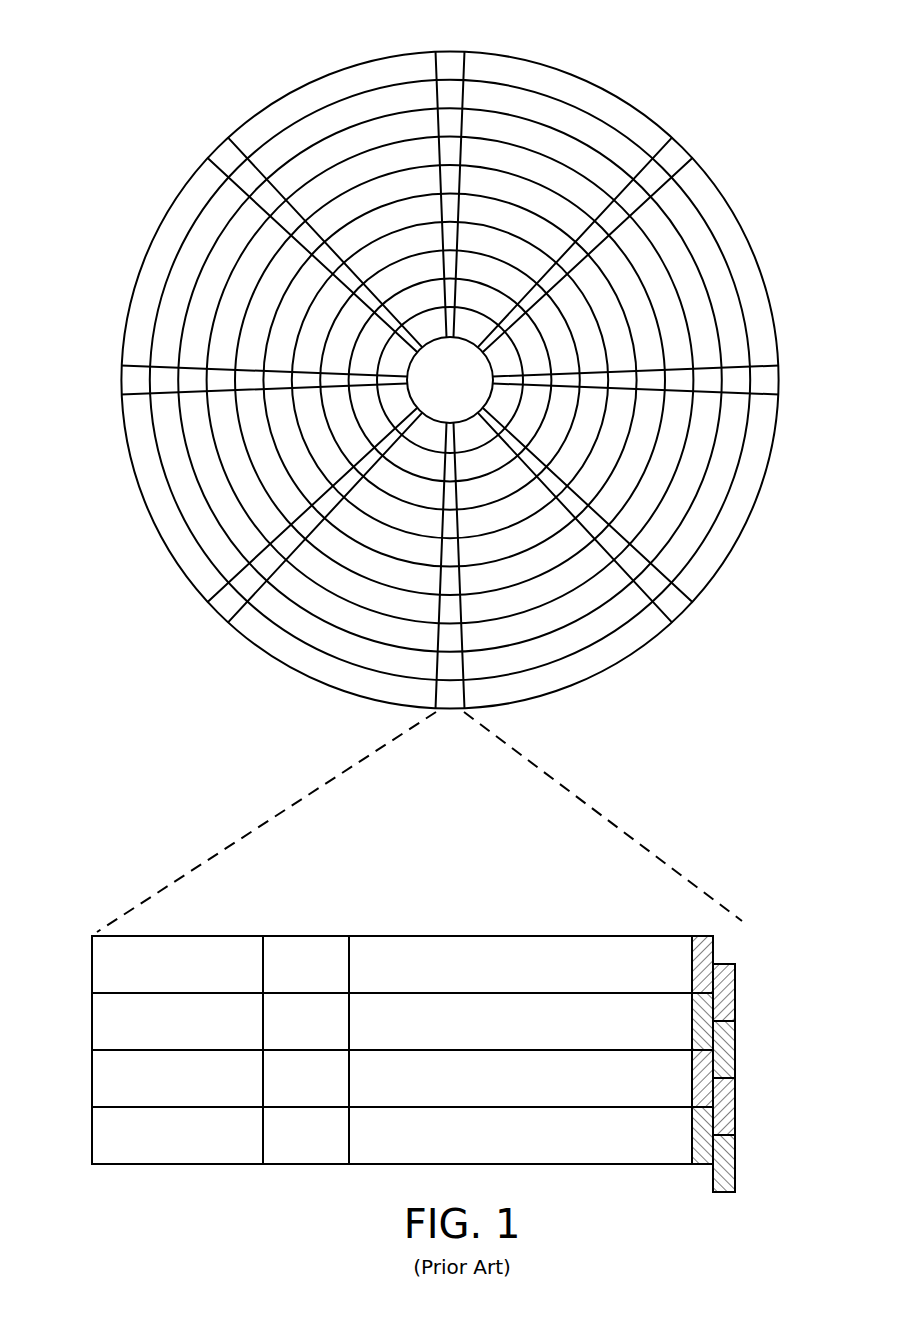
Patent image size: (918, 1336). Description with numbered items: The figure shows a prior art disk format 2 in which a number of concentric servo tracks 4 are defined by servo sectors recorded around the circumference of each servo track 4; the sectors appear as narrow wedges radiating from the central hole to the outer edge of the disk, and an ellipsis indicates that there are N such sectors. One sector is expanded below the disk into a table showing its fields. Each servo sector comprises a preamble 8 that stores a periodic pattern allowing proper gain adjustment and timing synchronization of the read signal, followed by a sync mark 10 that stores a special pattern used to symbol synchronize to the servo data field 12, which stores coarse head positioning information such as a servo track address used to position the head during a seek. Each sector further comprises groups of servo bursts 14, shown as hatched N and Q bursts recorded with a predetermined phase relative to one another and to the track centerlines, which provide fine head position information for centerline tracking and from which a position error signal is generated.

The disk format 2 is at (452, 391).
The servo track 4 is at (561, 120).
The preamble 8 is at (186, 935).
The sync mark 10 is at (309, 935).
The servo data field 12 is at (508, 935).
The servo bursts 14 is at (733, 932).